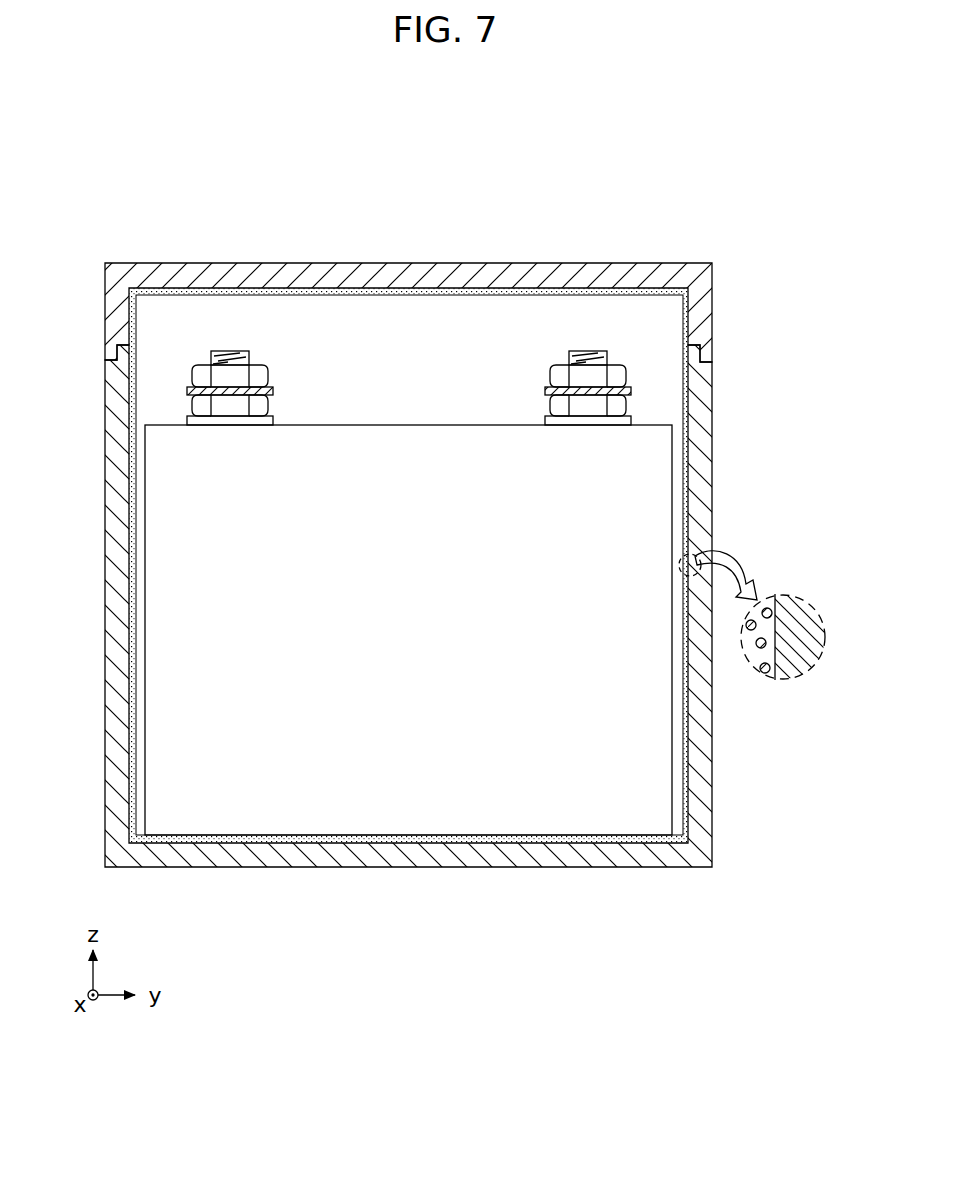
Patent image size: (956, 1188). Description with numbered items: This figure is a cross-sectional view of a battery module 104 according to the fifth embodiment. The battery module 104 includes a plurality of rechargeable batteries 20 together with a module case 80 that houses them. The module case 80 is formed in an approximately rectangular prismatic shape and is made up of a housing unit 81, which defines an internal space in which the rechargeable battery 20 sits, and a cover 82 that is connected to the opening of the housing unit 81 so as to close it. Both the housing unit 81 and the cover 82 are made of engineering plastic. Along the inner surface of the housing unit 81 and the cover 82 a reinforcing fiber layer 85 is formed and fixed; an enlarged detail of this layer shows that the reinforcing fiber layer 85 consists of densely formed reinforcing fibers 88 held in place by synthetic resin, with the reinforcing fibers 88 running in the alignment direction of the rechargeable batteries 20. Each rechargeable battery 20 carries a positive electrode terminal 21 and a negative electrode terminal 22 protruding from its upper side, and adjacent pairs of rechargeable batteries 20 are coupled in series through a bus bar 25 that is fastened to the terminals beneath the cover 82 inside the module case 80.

The battery module 104 is at (437, 152).
The module case 80 is at (660, 232).
The housing unit 81 is at (702, 458).
The cover 82 is at (374, 283).
The reinforcing fiber layer 85 is at (690, 502).
The reinforcing fibers 88 is at (771, 606).
The rechargeable battery 20 is at (143, 683).
The positive electrode terminal 21 is at (233, 351).
The negative electrode terminal 22 is at (597, 350).
The bus bar 25 is at (632, 390).